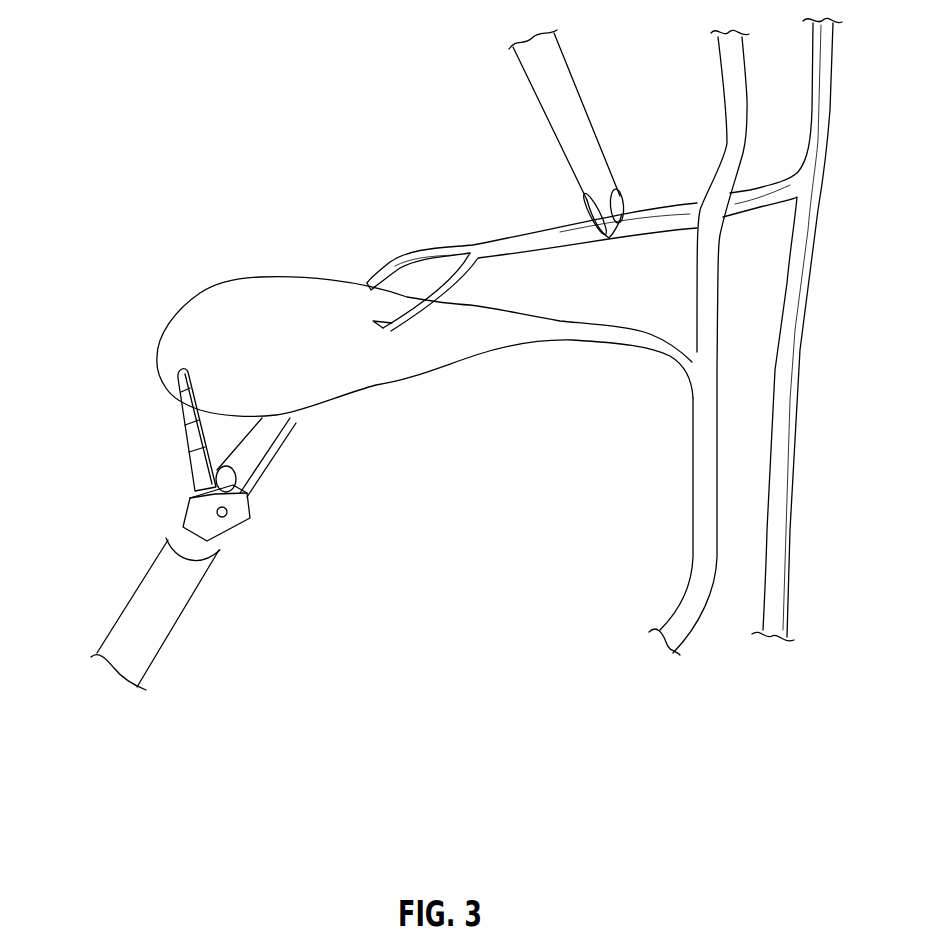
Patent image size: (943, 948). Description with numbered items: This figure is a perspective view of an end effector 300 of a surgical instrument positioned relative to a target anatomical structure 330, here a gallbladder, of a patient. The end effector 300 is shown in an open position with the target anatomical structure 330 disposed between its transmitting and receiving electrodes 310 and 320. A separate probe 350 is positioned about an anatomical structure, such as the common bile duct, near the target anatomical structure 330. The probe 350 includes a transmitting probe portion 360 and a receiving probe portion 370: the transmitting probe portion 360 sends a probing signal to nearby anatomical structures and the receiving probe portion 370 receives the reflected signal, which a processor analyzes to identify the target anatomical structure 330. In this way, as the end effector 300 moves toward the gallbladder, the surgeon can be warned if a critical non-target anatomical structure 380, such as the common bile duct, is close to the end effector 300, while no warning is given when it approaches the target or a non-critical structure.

The end effector 300 is at (195, 529).
The transmitting electrode 310 is at (210, 432).
The receiving electrode 320 is at (283, 418).
The target anatomical structure 330 is at (245, 278).
The probe 350 is at (539, 134).
The transmitting probe portion 360 is at (594, 212).
The receiving probe portion 370 is at (614, 190).
The non-target anatomical structure 380 is at (533, 230).